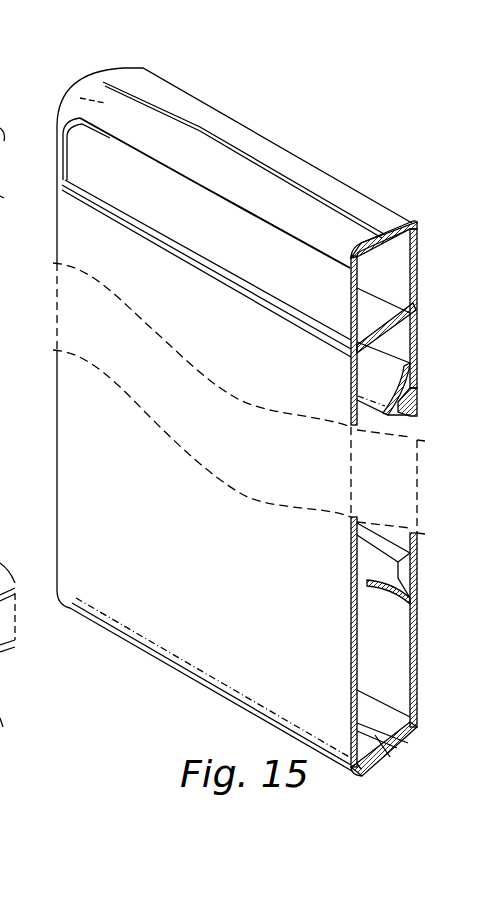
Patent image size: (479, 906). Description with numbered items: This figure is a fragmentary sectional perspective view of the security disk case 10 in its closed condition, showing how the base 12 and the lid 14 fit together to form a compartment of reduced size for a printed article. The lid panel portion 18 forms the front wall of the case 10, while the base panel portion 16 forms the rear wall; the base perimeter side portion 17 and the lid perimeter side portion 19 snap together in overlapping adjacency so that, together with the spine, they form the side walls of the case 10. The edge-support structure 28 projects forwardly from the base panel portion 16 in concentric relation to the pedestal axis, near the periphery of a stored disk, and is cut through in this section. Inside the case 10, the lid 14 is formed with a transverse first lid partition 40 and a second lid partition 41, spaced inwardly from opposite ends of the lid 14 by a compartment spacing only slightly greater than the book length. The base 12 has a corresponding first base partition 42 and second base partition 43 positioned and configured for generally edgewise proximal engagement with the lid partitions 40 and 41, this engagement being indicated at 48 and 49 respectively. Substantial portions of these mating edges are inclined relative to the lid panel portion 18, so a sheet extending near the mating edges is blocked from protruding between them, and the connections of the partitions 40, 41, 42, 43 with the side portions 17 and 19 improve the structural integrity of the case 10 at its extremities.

The security disk case 10 is at (170, 683).
The base 12 is at (420, 733).
The lid 14 is at (150, 654).
The base panel portion 16 is at (371, 668).
The base perimeter side portion 17 is at (368, 212).
The lid panel portion 18 is at (291, 673).
The lid perimeter side portion 19 is at (307, 207).
The edge-support structure 28 is at (404, 604).
The first lid partition 40 is at (360, 308).
The second lid partition 41 is at (358, 735).
The first base partition 42 is at (388, 326).
The second base partition 43 is at (369, 721).
The edgewise proximal engagement of first partitions 48 is at (374, 349).
The edgewise proximal engagement of second partitions 49 is at (377, 748).